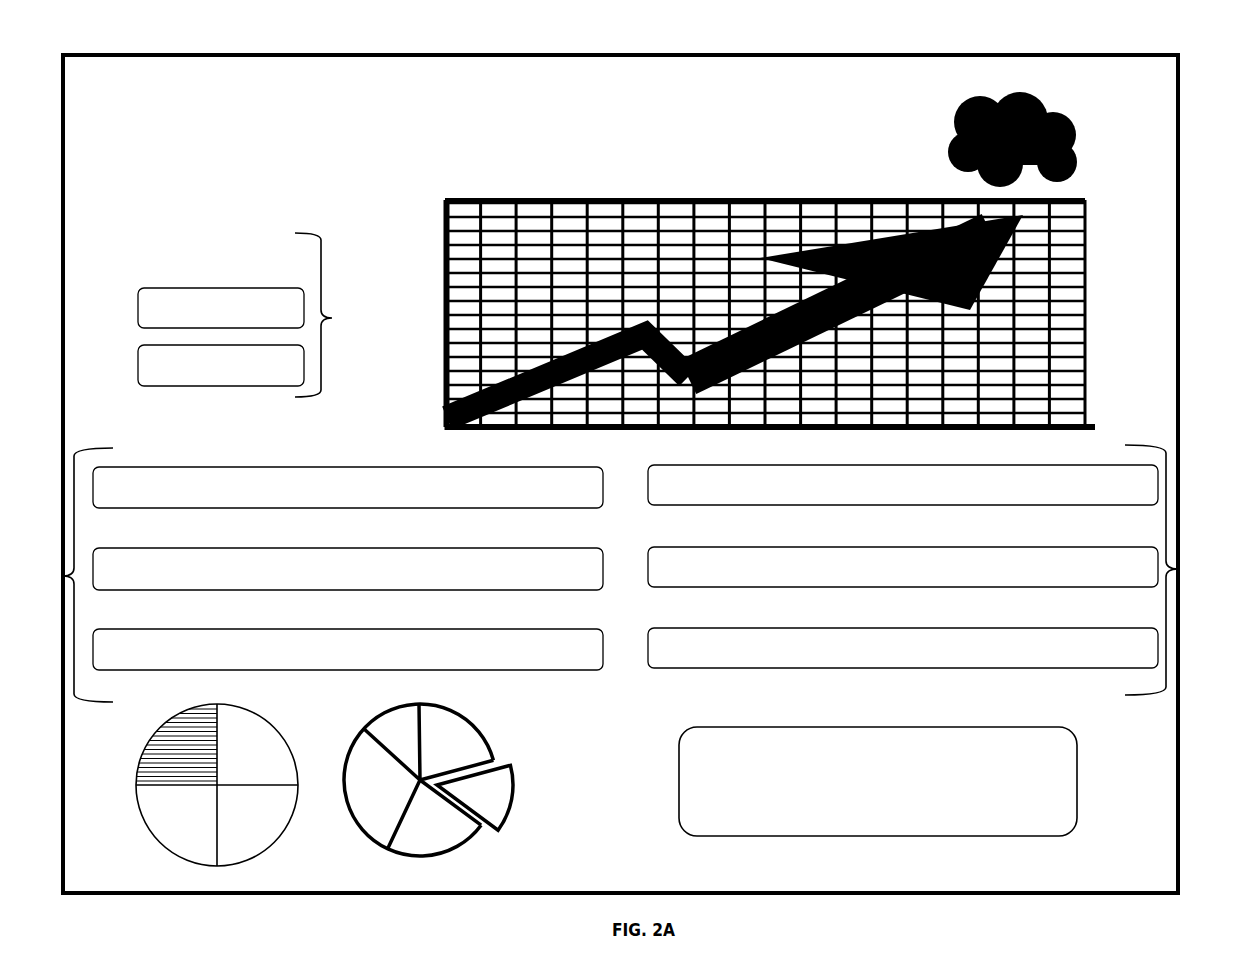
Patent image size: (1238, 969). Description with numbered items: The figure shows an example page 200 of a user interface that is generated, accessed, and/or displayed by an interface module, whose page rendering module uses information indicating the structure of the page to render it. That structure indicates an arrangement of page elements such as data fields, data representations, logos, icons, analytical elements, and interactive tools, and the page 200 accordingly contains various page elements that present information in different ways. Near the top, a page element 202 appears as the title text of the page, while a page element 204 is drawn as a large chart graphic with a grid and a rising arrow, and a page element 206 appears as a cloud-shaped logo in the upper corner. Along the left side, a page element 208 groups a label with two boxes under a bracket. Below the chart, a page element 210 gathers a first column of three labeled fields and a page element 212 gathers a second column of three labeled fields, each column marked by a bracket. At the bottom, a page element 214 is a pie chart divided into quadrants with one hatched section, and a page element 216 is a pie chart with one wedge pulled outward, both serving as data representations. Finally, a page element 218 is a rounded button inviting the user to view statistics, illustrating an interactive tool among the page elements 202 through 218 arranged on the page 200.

The page 200 is at (279, 53).
The page element 202 is at (300, 133).
The page element 204 is at (779, 191).
The page element 206 is at (1083, 156).
The page element 208 is at (332, 318).
The page element 210 is at (63, 576).
The page element 212 is at (1178, 569).
The page element 214 is at (293, 739).
The page element 216 is at (506, 748).
The page element 218 is at (1084, 787).